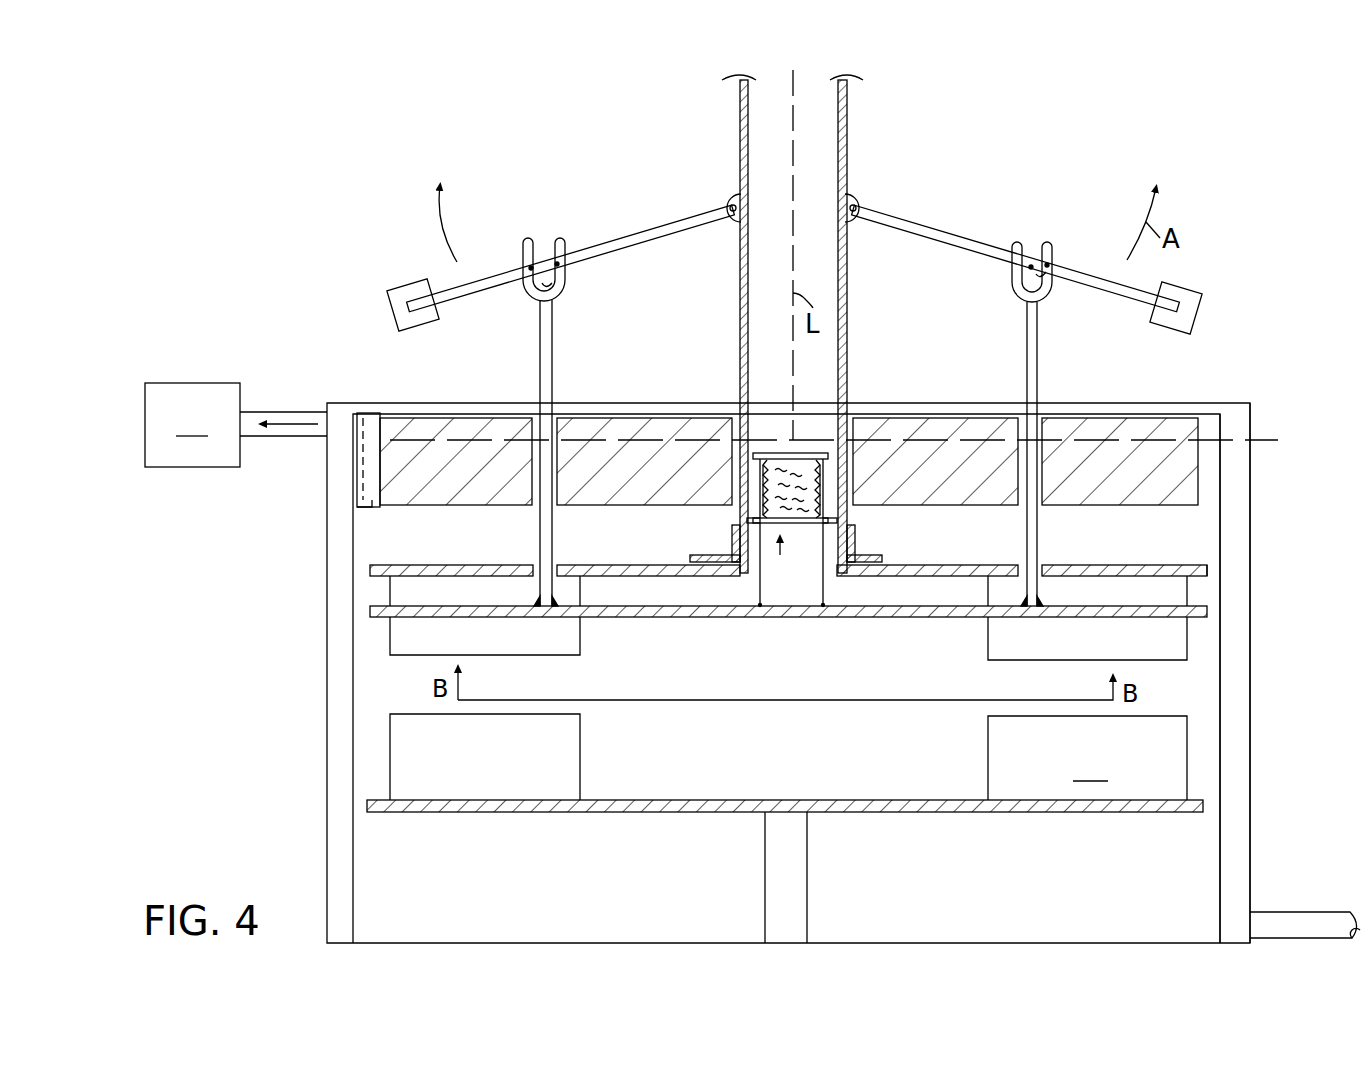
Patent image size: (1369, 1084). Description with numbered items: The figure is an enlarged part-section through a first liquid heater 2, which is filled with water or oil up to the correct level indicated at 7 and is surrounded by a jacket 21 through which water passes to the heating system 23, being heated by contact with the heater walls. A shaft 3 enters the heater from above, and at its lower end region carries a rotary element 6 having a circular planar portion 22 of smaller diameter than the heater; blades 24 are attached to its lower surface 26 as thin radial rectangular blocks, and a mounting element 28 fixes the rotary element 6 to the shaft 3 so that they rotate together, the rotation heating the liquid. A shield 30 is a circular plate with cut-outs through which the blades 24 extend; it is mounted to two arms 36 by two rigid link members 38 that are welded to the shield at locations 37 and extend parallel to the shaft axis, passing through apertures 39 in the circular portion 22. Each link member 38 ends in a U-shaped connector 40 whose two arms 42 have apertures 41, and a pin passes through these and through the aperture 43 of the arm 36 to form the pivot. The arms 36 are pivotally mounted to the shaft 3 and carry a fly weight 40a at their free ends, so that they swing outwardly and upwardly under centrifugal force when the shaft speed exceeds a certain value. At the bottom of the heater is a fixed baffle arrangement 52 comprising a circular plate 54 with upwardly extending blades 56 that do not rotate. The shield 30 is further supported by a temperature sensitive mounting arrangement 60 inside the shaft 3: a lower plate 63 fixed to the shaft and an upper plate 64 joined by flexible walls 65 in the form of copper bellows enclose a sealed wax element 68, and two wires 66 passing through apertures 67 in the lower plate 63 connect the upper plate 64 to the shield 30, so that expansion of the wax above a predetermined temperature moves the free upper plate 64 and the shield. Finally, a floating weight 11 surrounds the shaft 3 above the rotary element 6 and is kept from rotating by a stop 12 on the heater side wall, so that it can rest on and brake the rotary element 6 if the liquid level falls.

The liquid heater 2 is at (327, 845).
The shaft 3 is at (742, 112).
The rotary element 6 is at (1180, 565).
The liquid level 7 is at (1263, 443).
The floating weight 11 is at (1202, 487).
The stop 12 is at (360, 503).
The jacket 21 is at (1252, 637).
The circular planar portion 22 is at (1125, 565).
The heating system 23 is at (236, 425).
The blades 24 is at (1065, 648).
The lower surface 26 is at (638, 580).
The mounting element 28 is at (867, 553).
The shield 30 is at (610, 617).
The arms 36 is at (656, 222).
The locations 37 is at (1023, 597).
The rigid link members 38 is at (563, 350).
The apertures 39 is at (537, 562).
The U-shaped connector 40 is at (1017, 247).
The fly weight 40a is at (1185, 324).
The apertures 41 is at (1050, 248).
The arms of the U-shaped connector 42 is at (550, 243).
The aperture 43 is at (540, 282).
The baffle arrangement 52 is at (1197, 800).
The circular plate 54 is at (867, 813).
The blades 56 is at (788, 757).
The temperature sensitive mounting arrangement 60 is at (792, 565).
The lower plate 63 is at (793, 525).
The upper plate 64 is at (793, 455).
The flexible walls 65 is at (767, 478).
The wires 66 is at (822, 478).
The apertures 67 is at (755, 510).
The wax element 68 is at (787, 467).